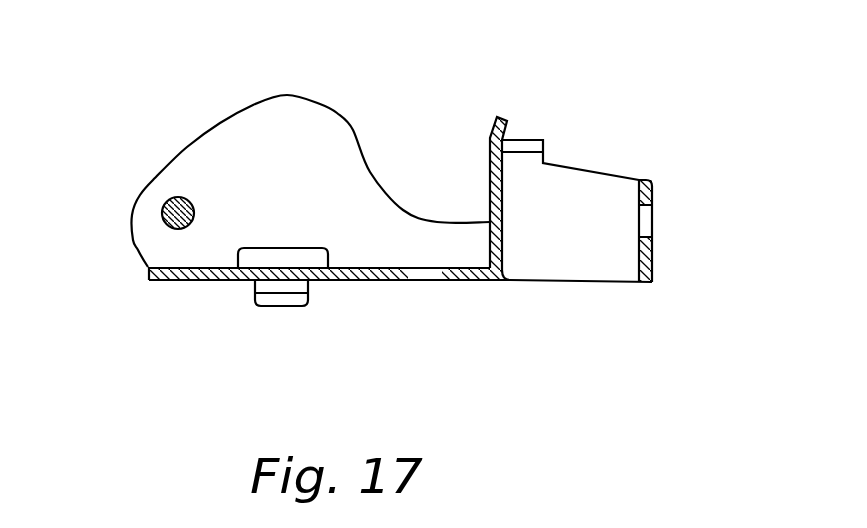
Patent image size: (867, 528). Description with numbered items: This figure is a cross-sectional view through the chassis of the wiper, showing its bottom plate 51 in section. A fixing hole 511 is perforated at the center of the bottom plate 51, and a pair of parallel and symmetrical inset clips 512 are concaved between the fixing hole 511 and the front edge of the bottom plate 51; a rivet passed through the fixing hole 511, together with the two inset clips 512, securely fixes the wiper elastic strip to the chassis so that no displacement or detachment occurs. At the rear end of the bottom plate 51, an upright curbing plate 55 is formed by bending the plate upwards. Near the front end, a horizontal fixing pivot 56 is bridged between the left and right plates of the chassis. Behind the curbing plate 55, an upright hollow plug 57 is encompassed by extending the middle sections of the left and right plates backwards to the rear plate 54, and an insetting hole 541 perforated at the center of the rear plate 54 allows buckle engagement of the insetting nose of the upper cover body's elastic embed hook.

The bottom plate 51 is at (197, 283).
The fixing hole 511 is at (425, 283).
The inset clips 512 is at (278, 305).
The rear plate 54 is at (652, 258).
The insetting hole 541 is at (652, 215).
The upright curbing plate 55 is at (500, 118).
The horizontal fixing pivot 56 is at (162, 214).
The upright hollow plug 57 is at (558, 214).